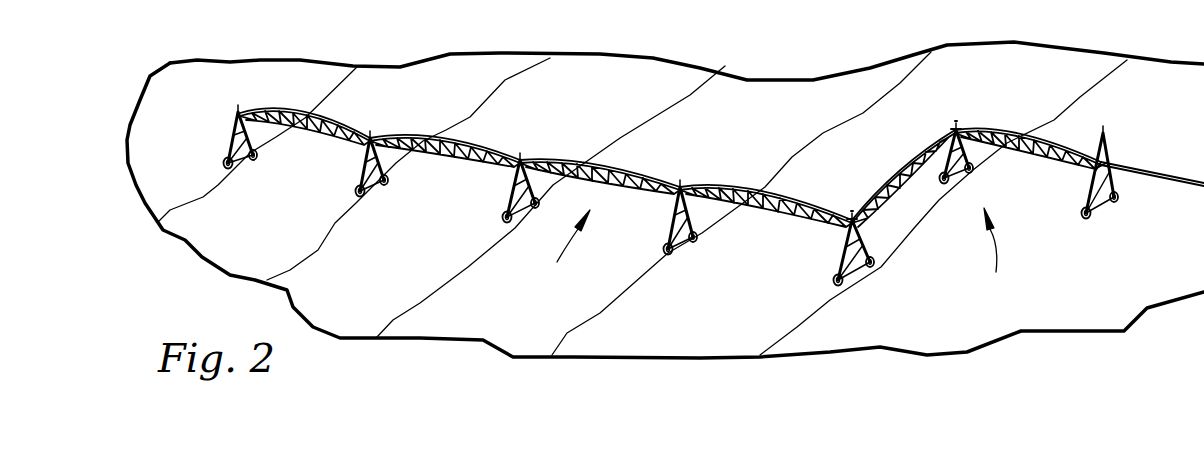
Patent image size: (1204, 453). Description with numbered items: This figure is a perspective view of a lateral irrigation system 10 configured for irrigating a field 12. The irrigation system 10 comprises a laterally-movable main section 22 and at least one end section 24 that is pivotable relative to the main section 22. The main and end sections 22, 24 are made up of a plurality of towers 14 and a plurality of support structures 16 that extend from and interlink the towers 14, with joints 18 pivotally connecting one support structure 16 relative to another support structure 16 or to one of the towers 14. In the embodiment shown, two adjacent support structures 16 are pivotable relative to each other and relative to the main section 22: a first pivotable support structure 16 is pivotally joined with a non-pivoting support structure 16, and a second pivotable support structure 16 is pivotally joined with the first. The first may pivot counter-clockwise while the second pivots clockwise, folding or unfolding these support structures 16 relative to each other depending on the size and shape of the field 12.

The irrigation system 10 is at (702, 157).
The field 12 is at (642, 80).
The towers 14 is at (231, 153).
The support structures 16 is at (307, 113).
The joints 18 is at (852, 216).
The main section 22 is at (559, 247).
The end section 24 is at (991, 251).